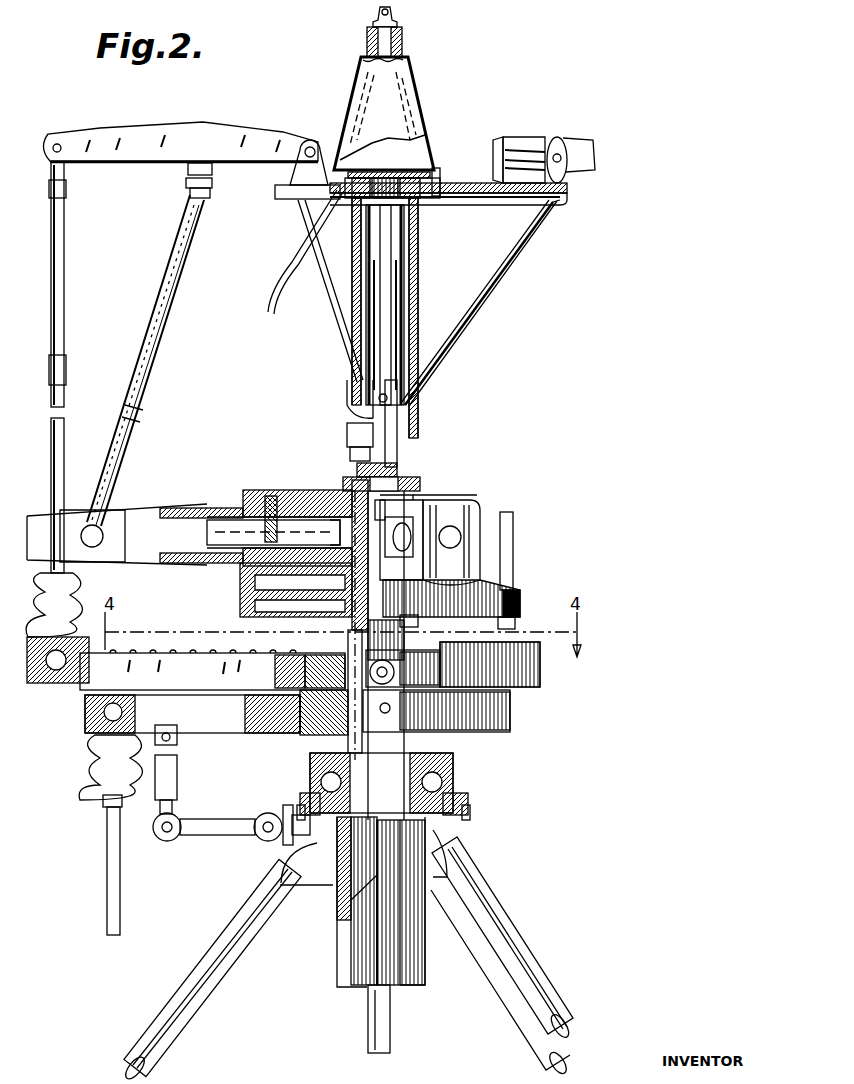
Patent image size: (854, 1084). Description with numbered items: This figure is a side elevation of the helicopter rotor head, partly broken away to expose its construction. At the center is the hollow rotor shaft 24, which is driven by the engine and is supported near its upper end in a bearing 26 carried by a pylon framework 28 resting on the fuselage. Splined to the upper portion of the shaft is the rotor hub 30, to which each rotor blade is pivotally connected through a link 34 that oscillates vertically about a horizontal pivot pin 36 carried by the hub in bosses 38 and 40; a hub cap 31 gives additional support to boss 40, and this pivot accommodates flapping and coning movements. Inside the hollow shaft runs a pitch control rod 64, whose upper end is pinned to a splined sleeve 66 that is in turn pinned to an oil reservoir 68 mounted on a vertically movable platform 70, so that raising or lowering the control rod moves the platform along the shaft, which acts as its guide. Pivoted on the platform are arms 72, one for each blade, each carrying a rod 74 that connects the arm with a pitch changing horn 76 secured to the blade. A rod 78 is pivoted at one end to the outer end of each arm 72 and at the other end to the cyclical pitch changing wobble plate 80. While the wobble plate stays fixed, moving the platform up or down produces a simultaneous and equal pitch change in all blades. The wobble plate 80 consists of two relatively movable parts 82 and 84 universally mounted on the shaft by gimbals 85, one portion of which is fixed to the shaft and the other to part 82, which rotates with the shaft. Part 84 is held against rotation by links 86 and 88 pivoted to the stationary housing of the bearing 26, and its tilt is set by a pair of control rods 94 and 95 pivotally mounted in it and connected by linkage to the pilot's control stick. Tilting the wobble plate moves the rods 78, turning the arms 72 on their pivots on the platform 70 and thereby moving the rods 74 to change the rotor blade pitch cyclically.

The rotor shaft 24 is at (410, 306).
The bearing 26 is at (458, 783).
The pylon framework 28 is at (540, 980).
The rotor hub 30 is at (245, 592).
The hub cap 31 is at (283, 497).
The link 34 is at (268, 492).
The horizontal pivot pin 36 is at (303, 515).
The boss 38 is at (428, 500).
The boss 40 is at (478, 530).
The pitch control rod 64 is at (352, 502).
The splined sleeve 66 is at (402, 243).
The oil reservoir 68 is at (402, 112).
The platform 70 is at (466, 190).
The arm 72 is at (222, 133).
The rod 74 is at (163, 333).
The pitch changing horn 76 is at (133, 518).
The rod 78 is at (66, 345).
The wobble plate 80 is at (146, 657).
The wobble plate part 82 is at (188, 665).
The wobble plate part 84 is at (200, 715).
The gimbals 85 is at (428, 662).
The link 86 is at (172, 778).
The link 88 is at (222, 830).
The control rod 94 is at (123, 900).
The control rod 95 is at (420, 740).